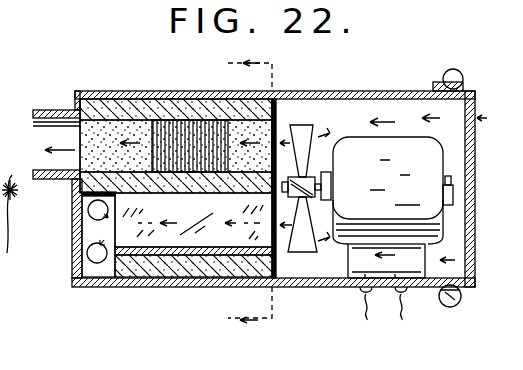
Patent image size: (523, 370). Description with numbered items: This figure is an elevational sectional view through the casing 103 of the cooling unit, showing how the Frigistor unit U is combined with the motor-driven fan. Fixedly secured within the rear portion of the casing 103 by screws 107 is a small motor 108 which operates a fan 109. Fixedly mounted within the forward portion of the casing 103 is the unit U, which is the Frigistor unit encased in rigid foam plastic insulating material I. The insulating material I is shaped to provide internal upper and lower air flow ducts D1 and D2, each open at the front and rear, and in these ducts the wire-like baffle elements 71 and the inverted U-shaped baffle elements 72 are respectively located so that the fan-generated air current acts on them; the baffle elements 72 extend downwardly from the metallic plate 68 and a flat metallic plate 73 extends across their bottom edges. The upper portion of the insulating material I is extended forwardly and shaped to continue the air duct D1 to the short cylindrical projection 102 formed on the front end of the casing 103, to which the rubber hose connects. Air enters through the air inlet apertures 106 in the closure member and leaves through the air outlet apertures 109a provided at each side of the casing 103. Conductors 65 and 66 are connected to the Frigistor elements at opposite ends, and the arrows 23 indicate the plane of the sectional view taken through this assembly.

The cylindrical projection 102 is at (52, 110).
The insulating material I is at (100, 117).
The upper air flow duct D1 is at (116, 131).
The lower air flow duct D2 is at (295, 304).
The wire-like baffle elements 71 is at (212, 125).
The inverted U-shaped baffle elements 72 is at (218, 233).
The flat metallic plate 73 is at (182, 262).
The metallic plate 68 is at (205, 196).
The air outlet apertures 109a is at (88, 210).
The fan 109 is at (303, 130).
The motor 108 is at (402, 147).
The screws 107 is at (383, 316).
The air inlet apertures 106 is at (484, 263).
The casing 103 is at (343, 287).
The conductor 65 is at (9, 205).
The conductor 66 is at (15, 267).
The unit U is at (86, 304).
The section line 23— 23 is at (227, 193).